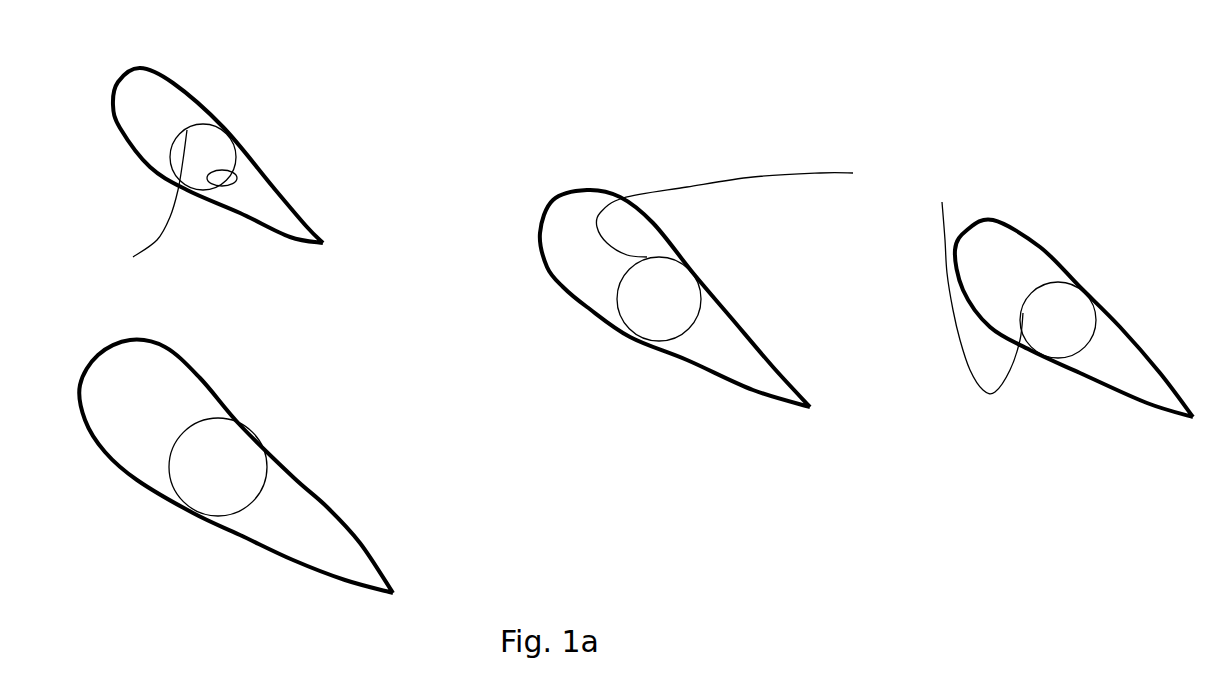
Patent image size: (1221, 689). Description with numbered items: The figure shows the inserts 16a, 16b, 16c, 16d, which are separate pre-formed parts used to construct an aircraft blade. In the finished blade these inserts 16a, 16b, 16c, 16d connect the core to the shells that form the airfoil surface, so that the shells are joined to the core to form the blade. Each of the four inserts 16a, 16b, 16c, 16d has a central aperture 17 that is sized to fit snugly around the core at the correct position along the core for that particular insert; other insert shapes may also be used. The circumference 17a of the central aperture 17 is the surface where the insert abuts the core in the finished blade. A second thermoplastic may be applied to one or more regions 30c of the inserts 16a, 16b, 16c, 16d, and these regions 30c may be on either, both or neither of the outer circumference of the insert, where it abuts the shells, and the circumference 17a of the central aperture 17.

The insert 16a is at (167, 108).
The insert 16b is at (280, 510).
The insert 16c is at (737, 348).
The insert 16d is at (1125, 355).
The central aperture 17 is at (210, 150).
The circumference of the central aperture 17a is at (207, 183).
The region of the insert 30c is at (187, 423).